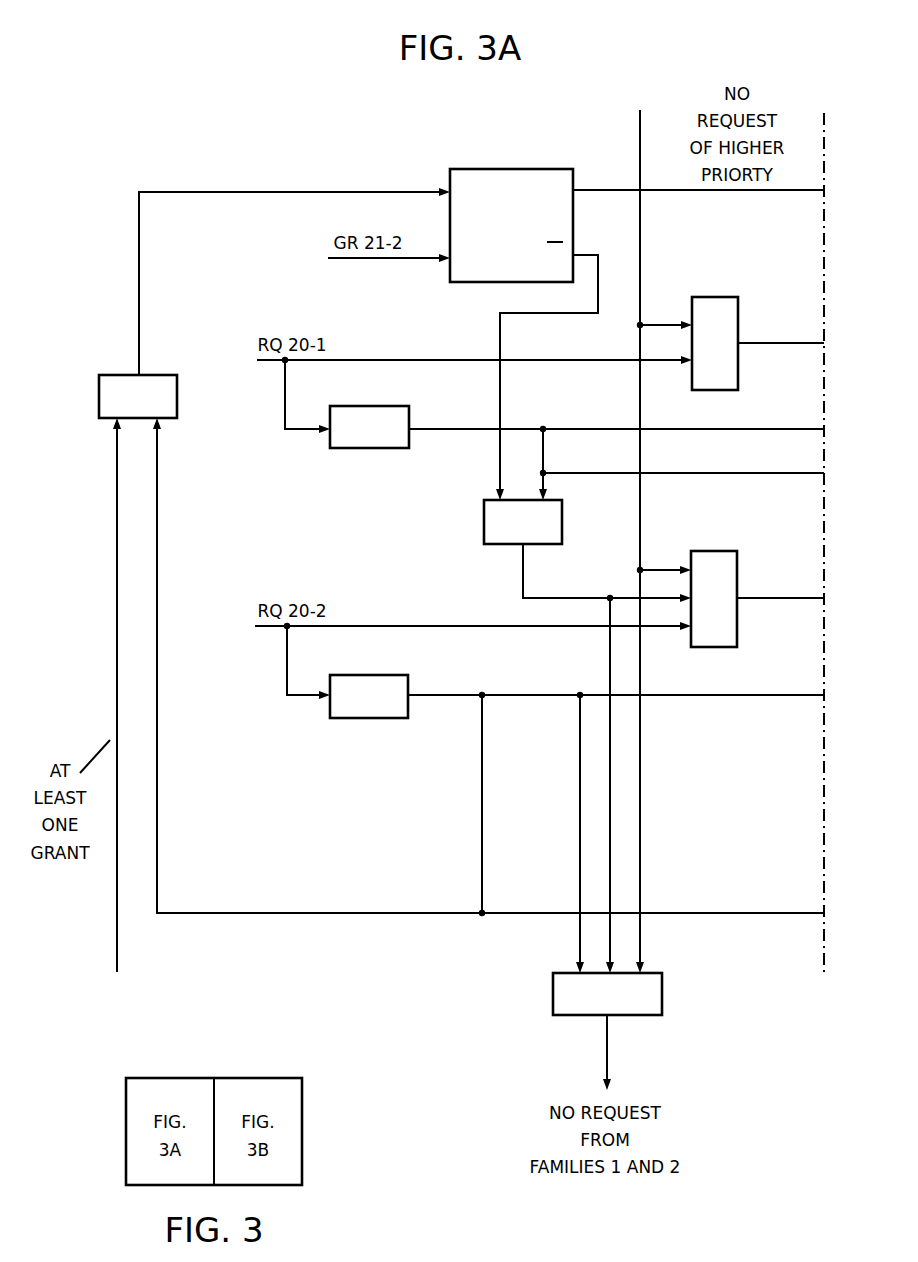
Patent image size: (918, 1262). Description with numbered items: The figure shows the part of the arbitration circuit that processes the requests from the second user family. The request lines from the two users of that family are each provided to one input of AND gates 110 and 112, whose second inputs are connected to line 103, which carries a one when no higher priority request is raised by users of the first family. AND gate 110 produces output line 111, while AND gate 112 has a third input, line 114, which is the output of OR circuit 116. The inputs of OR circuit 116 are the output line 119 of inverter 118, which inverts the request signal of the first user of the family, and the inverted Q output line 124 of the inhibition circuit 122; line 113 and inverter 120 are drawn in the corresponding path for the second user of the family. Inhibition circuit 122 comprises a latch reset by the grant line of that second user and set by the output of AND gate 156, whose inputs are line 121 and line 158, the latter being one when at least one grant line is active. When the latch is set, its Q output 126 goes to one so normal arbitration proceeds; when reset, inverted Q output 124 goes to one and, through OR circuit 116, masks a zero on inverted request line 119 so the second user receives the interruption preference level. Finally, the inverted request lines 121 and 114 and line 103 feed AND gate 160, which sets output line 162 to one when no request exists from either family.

The line 103 is at (639, 134).
The inhibition circuit 122 is at (532, 168).
The Q output line 126 is at (588, 190).
The inverted Q output line 124 is at (588, 255).
The AND gate 110 is at (722, 297).
The output line 111 is at (762, 343).
The AND gate 156 is at (158, 375).
The line 158 is at (117, 522).
The inverter 118 is at (409, 411).
The output line 119 is at (572, 428).
The OR circuit 116 is at (563, 530).
The output line 114 is at (538, 598).
The AND gate 112 is at (720, 550).
The AND gate output line 113 is at (770, 598).
The inverter 120 is at (409, 688).
The line 121 is at (508, 695).
The AND gate 160 is at (663, 986).
The output line 162 is at (610, 1060).